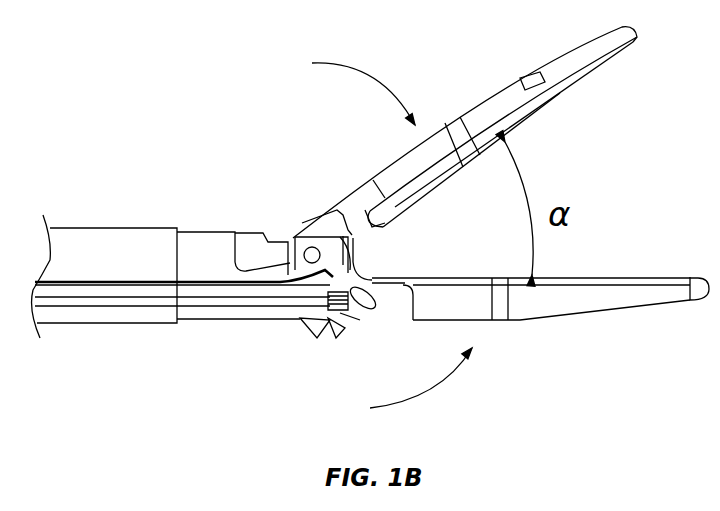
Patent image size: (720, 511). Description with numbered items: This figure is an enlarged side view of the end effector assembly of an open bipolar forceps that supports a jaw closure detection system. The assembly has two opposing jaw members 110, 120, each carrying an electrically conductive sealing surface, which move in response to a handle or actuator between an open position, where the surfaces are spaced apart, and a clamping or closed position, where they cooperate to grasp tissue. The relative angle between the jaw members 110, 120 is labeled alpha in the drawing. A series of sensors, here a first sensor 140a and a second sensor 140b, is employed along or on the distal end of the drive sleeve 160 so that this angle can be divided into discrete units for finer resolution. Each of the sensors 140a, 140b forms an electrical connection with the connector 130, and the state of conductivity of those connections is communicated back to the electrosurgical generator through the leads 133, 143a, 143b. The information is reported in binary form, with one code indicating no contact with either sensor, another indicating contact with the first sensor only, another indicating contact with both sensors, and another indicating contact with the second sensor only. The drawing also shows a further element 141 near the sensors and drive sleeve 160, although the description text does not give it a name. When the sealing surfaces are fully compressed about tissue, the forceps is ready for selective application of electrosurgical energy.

The jaw member 110 is at (503, 87).
The jaw member 120 is at (612, 322).
The connector 130 is at (327, 238).
The lead 133 is at (147, 280).
The latch member 141 is at (333, 340).
The lead 143a is at (143, 296).
The lead 143b is at (242, 303).
The sensor 140a is at (352, 297).
The sensor 140b is at (352, 312).
The drive sleeve 160 is at (370, 302).